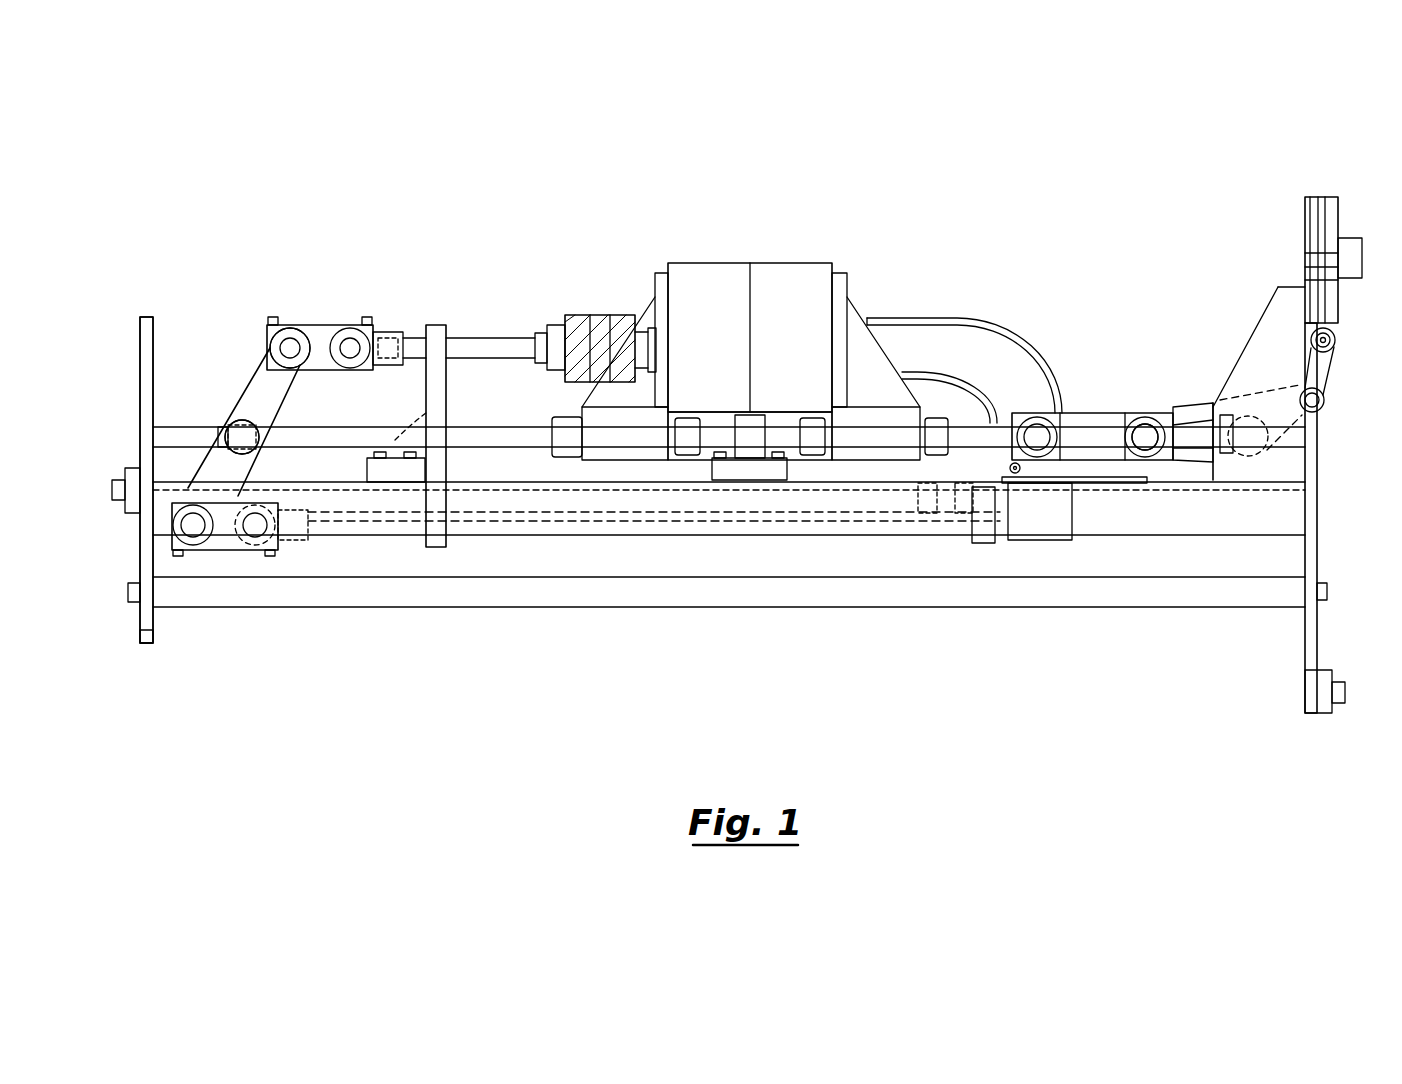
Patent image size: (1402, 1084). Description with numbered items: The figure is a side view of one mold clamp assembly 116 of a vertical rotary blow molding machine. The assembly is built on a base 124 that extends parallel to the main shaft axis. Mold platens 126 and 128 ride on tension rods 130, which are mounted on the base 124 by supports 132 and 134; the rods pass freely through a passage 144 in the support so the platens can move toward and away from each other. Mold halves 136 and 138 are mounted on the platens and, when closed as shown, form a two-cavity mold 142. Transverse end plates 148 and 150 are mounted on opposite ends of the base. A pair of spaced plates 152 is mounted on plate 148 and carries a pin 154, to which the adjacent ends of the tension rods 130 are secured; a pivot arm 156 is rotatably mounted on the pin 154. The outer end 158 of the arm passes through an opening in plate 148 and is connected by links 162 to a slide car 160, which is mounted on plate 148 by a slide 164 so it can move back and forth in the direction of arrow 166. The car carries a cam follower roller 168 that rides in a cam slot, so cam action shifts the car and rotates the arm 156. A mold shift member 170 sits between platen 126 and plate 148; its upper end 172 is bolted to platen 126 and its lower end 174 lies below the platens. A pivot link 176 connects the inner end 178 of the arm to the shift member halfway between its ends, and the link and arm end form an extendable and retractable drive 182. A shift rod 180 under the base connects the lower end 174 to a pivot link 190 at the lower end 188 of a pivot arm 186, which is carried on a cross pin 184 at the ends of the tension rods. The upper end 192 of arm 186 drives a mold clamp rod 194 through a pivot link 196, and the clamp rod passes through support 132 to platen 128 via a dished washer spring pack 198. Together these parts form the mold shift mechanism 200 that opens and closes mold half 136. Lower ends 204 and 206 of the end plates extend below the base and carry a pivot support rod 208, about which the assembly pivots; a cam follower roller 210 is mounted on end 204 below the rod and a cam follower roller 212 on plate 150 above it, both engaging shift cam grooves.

The mold clamp assembly 116 is at (506, 154).
The base 124 is at (480, 483).
The mold platen 126 is at (853, 290).
The mold platen 128 is at (656, 290).
The tension rods 130 is at (487, 427).
The support 132 is at (437, 324).
The support 134 is at (760, 414).
The mold half 136 is at (700, 262).
The mold half 138 is at (817, 262).
The two-cavity mold 142 is at (738, 248).
The passage 144 is at (396, 440).
The transverse end plate 148 is at (1292, 655).
The transverse end plate 150 is at (165, 637).
The spaced plates 152 is at (1266, 310).
The pin 154 is at (1222, 450).
The pivot arm 156 is at (1210, 405).
The outer end 158 is at (1300, 388).
The slide car 160 is at (1334, 205).
The links 162 is at (1307, 357).
The slide 164 is at (1308, 198).
The arrow 166 is at (1293, 250).
The cam follower roller 168 is at (1352, 238).
The mold shift member 170 is at (960, 316).
The upper end 172 is at (875, 320).
The lower end 174 is at (1050, 530).
The pivot link 176 is at (1085, 412).
The inner end 178 is at (1180, 400).
The shift rod 180 is at (493, 533).
The extendable and retractable drive 182 is at (1172, 472).
The cross pin 184 is at (242, 420).
The pivot arm 186 is at (270, 385).
The lower end 188 is at (222, 515).
The pivot link 190 is at (245, 535).
The upper end 192 is at (268, 343).
The mold clamp rod 194 is at (487, 338).
The pivot link 196 is at (289, 325).
The dished washer spring pack 198 is at (580, 314).
The mold shift mechanism 200 is at (210, 412).
The lower end 204 is at (1303, 675).
The lower end 206 is at (146, 645).
The pivot support rod 208 is at (790, 608).
The cam follower roller 210 is at (1340, 705).
The cam follower roller 212 is at (140, 360).